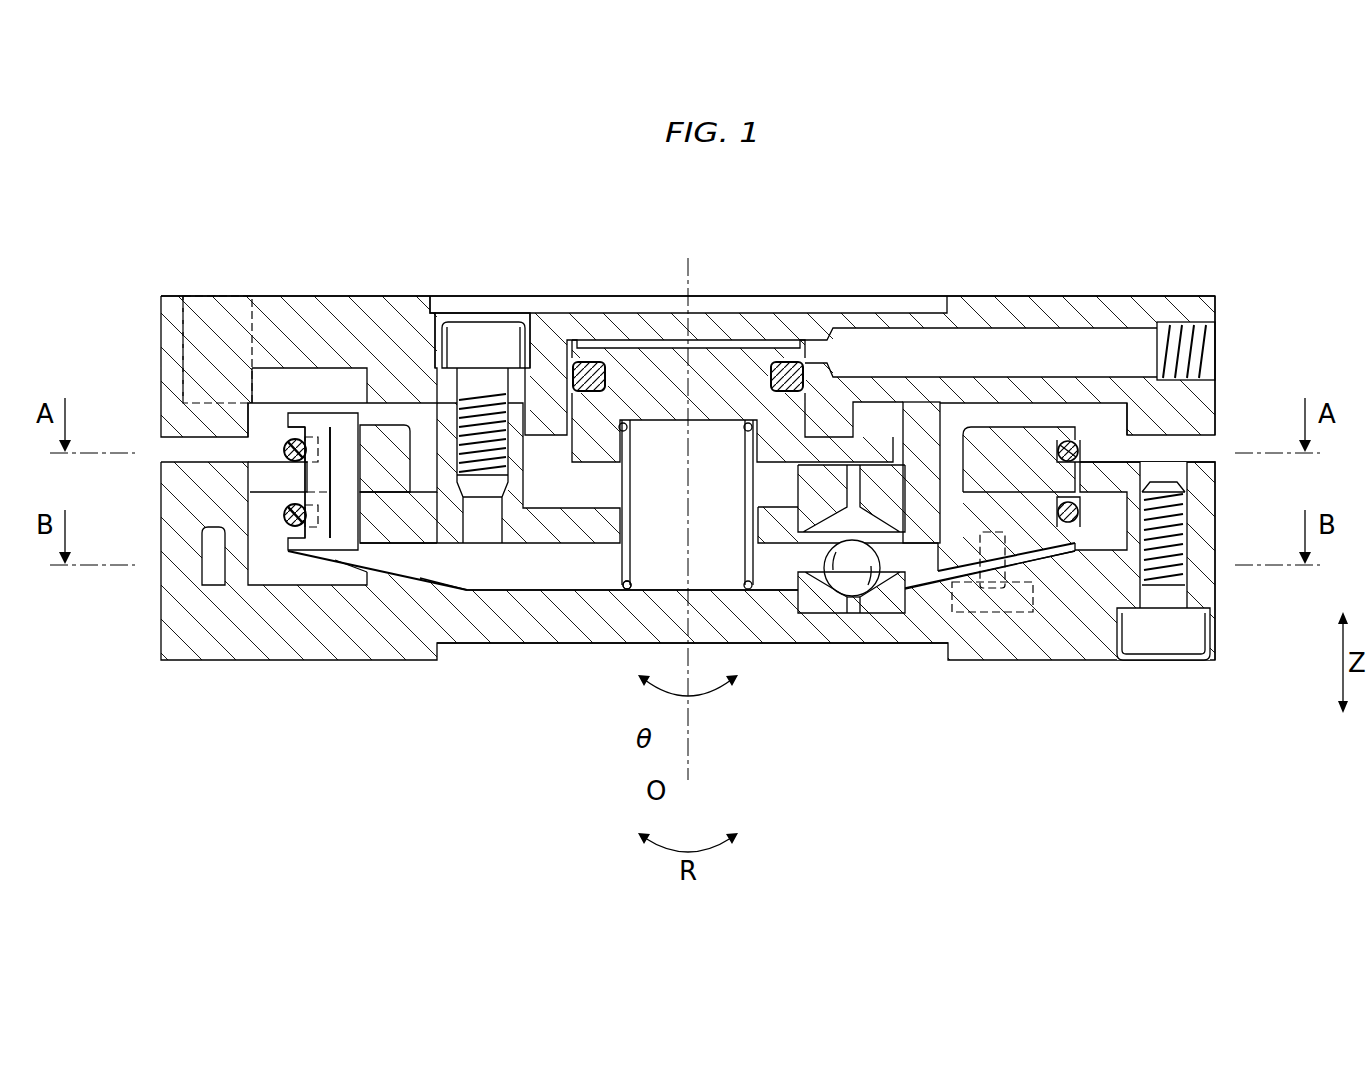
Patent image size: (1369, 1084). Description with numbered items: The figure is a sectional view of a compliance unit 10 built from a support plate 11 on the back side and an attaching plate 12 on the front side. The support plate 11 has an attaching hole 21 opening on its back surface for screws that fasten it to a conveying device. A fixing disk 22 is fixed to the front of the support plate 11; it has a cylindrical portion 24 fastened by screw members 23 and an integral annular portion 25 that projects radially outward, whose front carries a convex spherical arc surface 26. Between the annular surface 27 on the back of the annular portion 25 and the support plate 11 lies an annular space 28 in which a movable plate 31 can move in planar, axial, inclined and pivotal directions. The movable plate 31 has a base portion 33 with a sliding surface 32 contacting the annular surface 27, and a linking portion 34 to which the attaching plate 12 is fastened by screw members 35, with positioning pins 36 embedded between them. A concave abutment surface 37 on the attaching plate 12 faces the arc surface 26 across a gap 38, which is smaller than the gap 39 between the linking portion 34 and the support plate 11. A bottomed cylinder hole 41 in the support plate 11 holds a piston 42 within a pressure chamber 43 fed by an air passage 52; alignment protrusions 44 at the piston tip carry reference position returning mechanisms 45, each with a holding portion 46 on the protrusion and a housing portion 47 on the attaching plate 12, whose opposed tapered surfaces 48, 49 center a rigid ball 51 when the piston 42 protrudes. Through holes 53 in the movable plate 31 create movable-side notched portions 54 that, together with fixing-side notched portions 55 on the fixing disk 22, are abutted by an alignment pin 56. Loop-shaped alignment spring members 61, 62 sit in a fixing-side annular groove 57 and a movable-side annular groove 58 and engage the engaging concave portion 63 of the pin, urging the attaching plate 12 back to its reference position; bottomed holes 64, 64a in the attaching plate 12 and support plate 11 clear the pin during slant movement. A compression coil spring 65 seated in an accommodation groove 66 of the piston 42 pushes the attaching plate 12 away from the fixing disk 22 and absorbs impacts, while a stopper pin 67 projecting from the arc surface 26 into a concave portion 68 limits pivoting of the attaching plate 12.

The compliance unit 10 is at (1225, 250).
The support plate 11 is at (215, 447).
The attaching plate 12 is at (262, 585).
The attaching hole 21 is at (183, 373).
The fixing disk 22 is at (552, 546).
The screw member 23 is at (484, 333).
The cylindrical portion 24 is at (1020, 433).
The annular portion 25 is at (400, 552).
The arc surface 26 is at (1045, 572).
The annular surface 27 is at (990, 566).
The annular space 28 is at (1130, 347).
The movable plate 31 is at (1112, 463).
The sliding surface 32 is at (448, 512).
The base portion 33 is at (1093, 408).
The linking portion 34 is at (1205, 470).
The screw member 35 is at (1195, 635).
The positioning pin 36 is at (207, 567).
The abutment surface 37 is at (928, 582).
The gap 38 is at (368, 500).
The gap 39 is at (184, 370).
The cylinder hole 41 is at (790, 372).
The piston 42 is at (728, 358).
The pressure chamber 43 is at (590, 372).
The alignment protrusion 44 is at (855, 440).
The reference position returning mechanism 45 is at (792, 563).
The holding portion 46 is at (920, 423).
The housing portion 47 is at (848, 583).
The tapered surface 48 is at (882, 603).
The tapered surface 49 is at (822, 600).
The rigid ball 51 is at (850, 618).
The air passage 52 is at (1160, 375).
The through hole 53 is at (262, 452).
The movable-side notched portion 54 is at (447, 445).
The fixing-side notched portion 55 is at (345, 560).
The alignment pin 56 is at (345, 455).
The fixing-side annular groove 57 is at (1070, 524).
The movable-side annular groove 58 is at (1082, 448).
The alignment spring member 61 is at (290, 490).
The alignment spring member 62 is at (293, 440).
The engaging concave portion 63 is at (247, 560).
The bottomed hole 64 is at (305, 545).
The bottomed hole 64a is at (318, 455).
The compression coil spring 65 is at (627, 590).
The accommodation groove 66 is at (655, 420).
The stopper pin 67 is at (985, 590).
The concave portion 68 is at (998, 548).